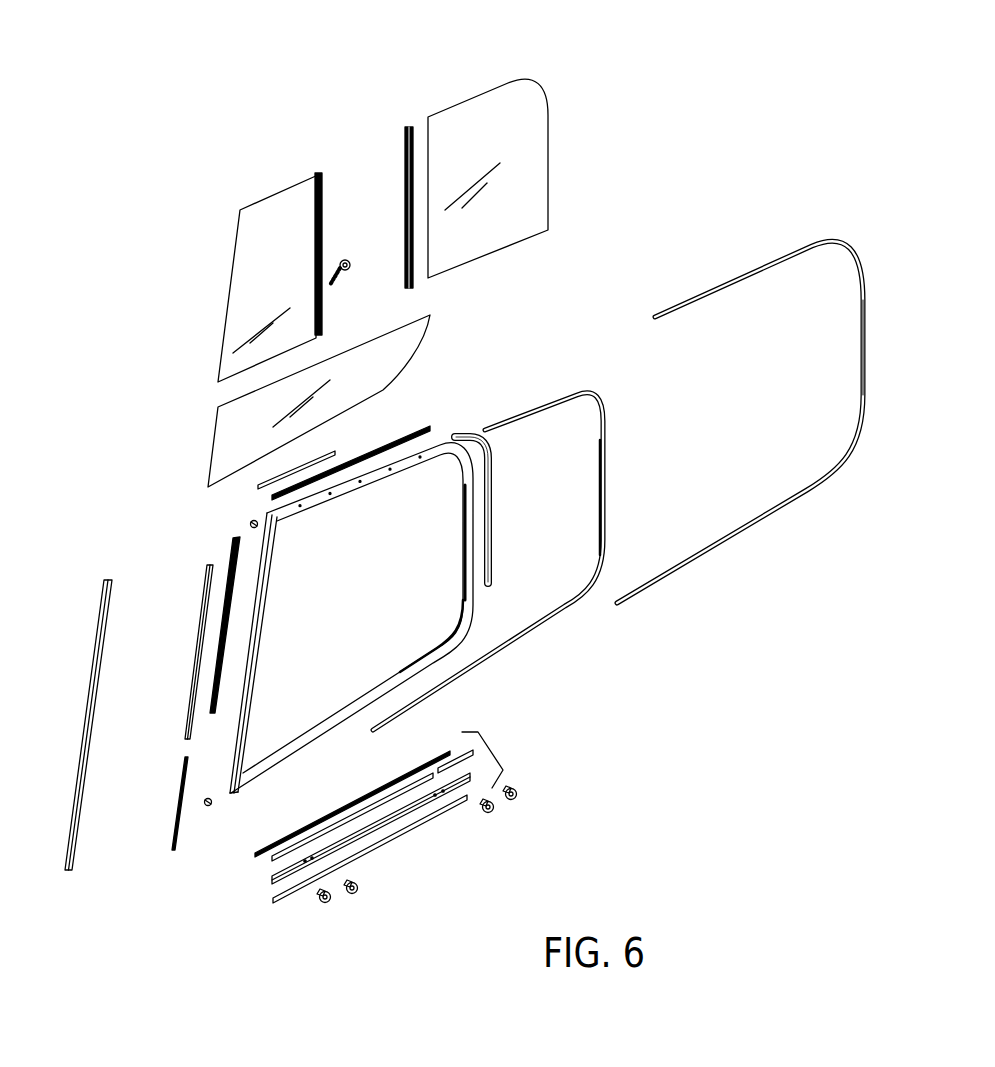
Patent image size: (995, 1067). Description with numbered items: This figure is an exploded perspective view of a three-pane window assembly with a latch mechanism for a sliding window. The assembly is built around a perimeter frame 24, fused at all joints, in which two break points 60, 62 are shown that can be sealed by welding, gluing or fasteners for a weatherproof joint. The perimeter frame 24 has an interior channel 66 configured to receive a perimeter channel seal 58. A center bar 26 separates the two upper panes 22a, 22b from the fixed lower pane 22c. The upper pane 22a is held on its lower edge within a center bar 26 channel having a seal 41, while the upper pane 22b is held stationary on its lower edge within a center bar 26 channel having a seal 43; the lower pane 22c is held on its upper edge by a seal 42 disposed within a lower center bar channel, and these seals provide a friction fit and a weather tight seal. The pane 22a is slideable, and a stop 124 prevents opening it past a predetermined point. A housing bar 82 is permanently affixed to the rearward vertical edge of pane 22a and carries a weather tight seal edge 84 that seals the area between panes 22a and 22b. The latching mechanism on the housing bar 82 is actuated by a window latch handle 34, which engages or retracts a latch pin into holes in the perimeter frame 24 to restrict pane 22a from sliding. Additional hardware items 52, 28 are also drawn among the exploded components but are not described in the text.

The upper pane 22a is at (250, 320).
The upper pane 22b is at (503, 98).
The lower pane 22c is at (402, 350).
The housing bar 82 is at (303, 312).
The weather tight seal edge 84 is at (407, 170).
The window latch handle 34 is at (330, 267).
The seal 43 is at (403, 433).
The interior channel 66 is at (460, 505).
The perimeter frame 24 is at (465, 594).
The perimeter channel seal 58 is at (605, 483).
The break point 60 is at (262, 517).
The break point 62 is at (227, 793).
The seal 41 is at (367, 795).
The seal 42 is at (383, 803).
The stop 124 is at (458, 757).
The center bar 26 is at (493, 752).
The bottom track channel 52 is at (303, 867).
The roller fasteners 28 is at (323, 903).